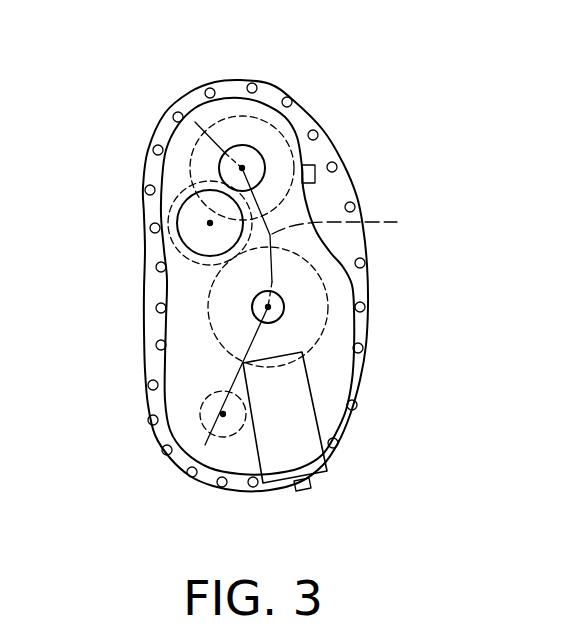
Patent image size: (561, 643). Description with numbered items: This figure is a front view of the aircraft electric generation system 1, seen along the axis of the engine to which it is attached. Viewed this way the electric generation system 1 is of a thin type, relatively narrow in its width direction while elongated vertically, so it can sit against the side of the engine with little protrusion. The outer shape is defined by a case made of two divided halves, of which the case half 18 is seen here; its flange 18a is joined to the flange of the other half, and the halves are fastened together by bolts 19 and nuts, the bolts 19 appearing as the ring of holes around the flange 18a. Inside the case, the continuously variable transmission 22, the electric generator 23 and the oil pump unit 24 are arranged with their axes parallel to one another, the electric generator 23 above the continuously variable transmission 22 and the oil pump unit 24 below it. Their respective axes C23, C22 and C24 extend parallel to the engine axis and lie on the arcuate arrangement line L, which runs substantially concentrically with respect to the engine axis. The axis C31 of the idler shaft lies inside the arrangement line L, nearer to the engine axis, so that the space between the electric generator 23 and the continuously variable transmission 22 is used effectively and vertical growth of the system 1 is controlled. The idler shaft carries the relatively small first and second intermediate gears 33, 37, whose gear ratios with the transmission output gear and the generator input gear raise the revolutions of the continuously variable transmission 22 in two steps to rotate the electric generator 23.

The aircraft electric generation system 1 is at (377, 140).
The case half 18 is at (327, 380).
The flange 18a is at (363, 285).
The bolts 19 is at (150, 236).
The continuously variable transmission 22 is at (211, 328).
The electric generator 23 is at (238, 116).
The oil pump unit 24 is at (207, 398).
The first intermediate gear 33 is at (190, 178).
The second intermediate gear 37 is at (242, 168).
The axis of the continuously variable transmission C22 is at (268, 307).
The axis of the electric generator C23 is at (242, 168).
The axis of the oil pump unit C24 is at (223, 414).
The axis of the idler shaft C31 is at (210, 223).
The arcuate arrangement line L is at (345, 222).